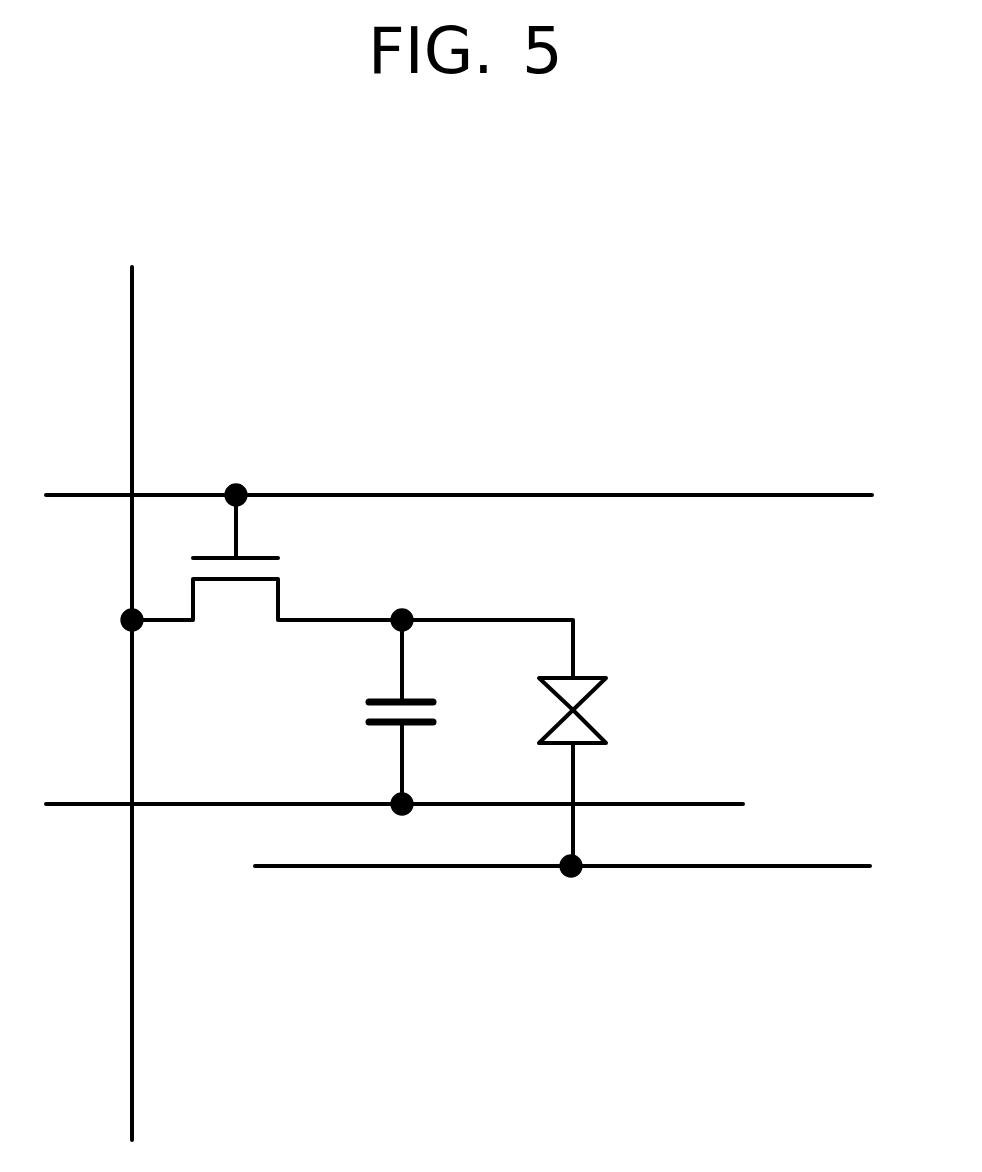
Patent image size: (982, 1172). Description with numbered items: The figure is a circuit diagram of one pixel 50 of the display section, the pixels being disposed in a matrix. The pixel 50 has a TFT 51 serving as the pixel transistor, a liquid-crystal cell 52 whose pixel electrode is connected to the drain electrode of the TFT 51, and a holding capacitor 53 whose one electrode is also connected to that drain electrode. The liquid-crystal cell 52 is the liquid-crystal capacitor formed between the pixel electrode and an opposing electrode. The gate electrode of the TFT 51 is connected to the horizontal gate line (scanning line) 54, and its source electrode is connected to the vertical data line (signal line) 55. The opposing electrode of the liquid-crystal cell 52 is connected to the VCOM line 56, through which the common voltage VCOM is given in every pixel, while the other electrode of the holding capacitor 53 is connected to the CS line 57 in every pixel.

The pixel 50 is at (783, 390).
The TFT (thin film transistor) 51 is at (338, 567).
The liquid-crystal cell 52 is at (642, 722).
The holding capacitor 53 is at (338, 903).
The gate line (scanning line) 54 is at (297, 496).
The data line (signal line) 55 is at (210, 1112).
The VCOM line 56 is at (702, 973).
The CS line 57 is at (250, 975).